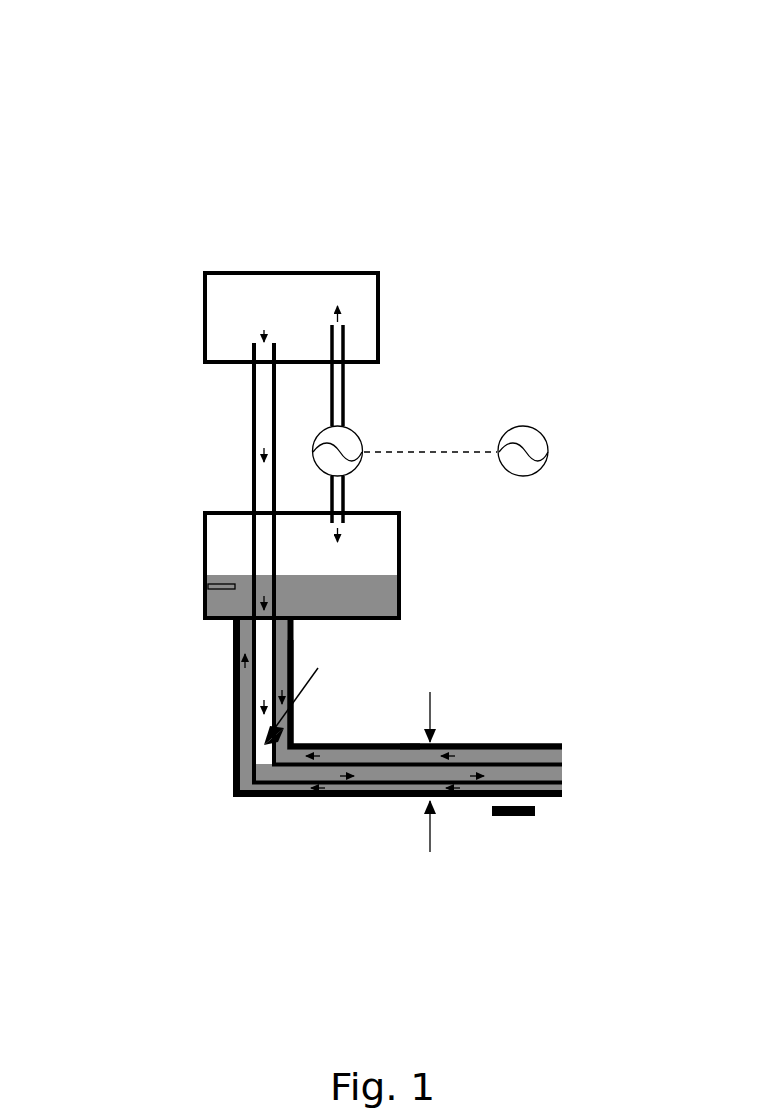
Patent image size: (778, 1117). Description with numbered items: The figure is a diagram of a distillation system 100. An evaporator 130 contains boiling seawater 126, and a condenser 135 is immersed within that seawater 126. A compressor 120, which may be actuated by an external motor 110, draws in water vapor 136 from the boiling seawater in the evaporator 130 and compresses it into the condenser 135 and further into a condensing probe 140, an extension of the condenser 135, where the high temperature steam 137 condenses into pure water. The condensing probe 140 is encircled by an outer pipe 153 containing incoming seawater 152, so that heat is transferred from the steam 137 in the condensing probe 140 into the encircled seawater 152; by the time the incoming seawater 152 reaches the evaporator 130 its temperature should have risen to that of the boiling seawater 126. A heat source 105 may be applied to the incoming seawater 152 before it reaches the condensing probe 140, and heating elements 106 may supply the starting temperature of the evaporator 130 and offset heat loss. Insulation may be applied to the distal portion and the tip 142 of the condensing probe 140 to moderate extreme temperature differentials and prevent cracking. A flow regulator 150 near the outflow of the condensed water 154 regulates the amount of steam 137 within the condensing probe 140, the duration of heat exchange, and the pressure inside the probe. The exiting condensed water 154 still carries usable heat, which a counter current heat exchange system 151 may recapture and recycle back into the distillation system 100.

The distillation system 100 is at (117, 117).
The heat source 105 is at (522, 820).
The heating elements 106 is at (208, 586).
The external motor 110 is at (479, 433).
The compressor 120 is at (368, 424).
The seawater 126 is at (380, 604).
The evaporator 130 is at (204, 512).
The condenser 135 is at (258, 568).
The vapor 136 is at (388, 523).
The steam 137 is at (358, 295).
The condensing probe 140 is at (318, 691).
The tip 142 is at (262, 734).
The flow regulator 150 is at (388, 750).
The counter current heat exchange system 151 is at (522, 727).
The incoming seawater 152 is at (578, 751).
The outer pipe 153 is at (430, 774).
The condensed water 154 is at (566, 773).